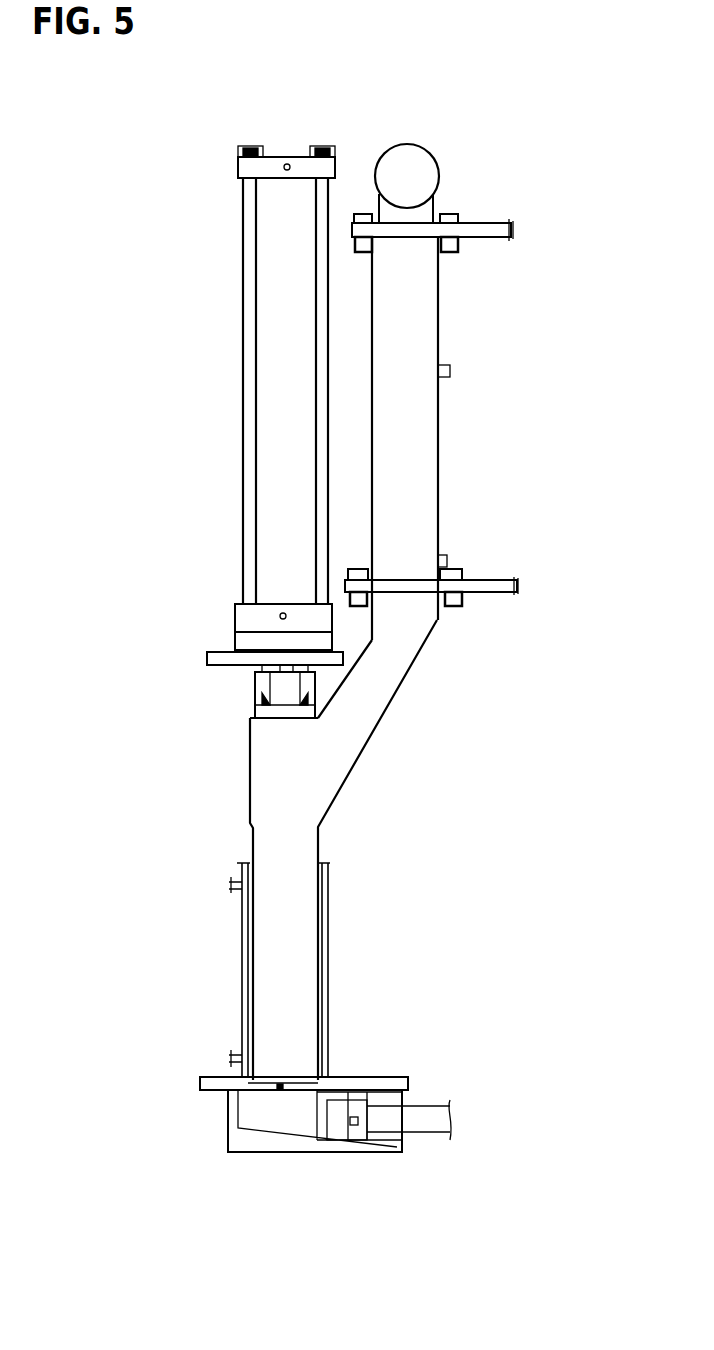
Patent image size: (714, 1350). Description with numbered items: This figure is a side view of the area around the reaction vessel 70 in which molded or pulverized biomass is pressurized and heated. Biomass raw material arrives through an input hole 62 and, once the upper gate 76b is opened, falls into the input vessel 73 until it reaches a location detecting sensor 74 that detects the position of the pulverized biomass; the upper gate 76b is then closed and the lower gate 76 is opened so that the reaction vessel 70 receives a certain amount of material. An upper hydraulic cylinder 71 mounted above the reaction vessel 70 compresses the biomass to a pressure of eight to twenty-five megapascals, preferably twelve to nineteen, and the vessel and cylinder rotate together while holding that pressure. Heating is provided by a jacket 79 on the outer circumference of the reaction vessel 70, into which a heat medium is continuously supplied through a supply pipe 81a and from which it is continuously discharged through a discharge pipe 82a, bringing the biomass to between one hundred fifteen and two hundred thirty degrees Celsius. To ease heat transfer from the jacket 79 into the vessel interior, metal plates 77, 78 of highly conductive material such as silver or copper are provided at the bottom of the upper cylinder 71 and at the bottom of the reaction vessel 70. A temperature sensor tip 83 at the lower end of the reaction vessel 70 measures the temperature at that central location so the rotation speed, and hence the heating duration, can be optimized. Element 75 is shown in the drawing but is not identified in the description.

The input hole 62 is at (410, 167).
The reaction vessel 70 is at (277, 858).
The upper hydraulic cylinder 71 is at (258, 381).
The input vessel 73 is at (418, 313).
The location detecting sensor 74 is at (450, 368).
The lower stopper 75 is at (447, 557).
The lower gate 76 is at (498, 592).
The upper gate 76b is at (487, 224).
The metal plate 77 is at (276, 720).
The metal plate 78 is at (263, 1091).
The jacket 79 is at (242, 967).
The supply pipe 81a is at (229, 1062).
The discharge pipe 82a is at (229, 890).
The temperature sensor tip 83 is at (280, 1084).